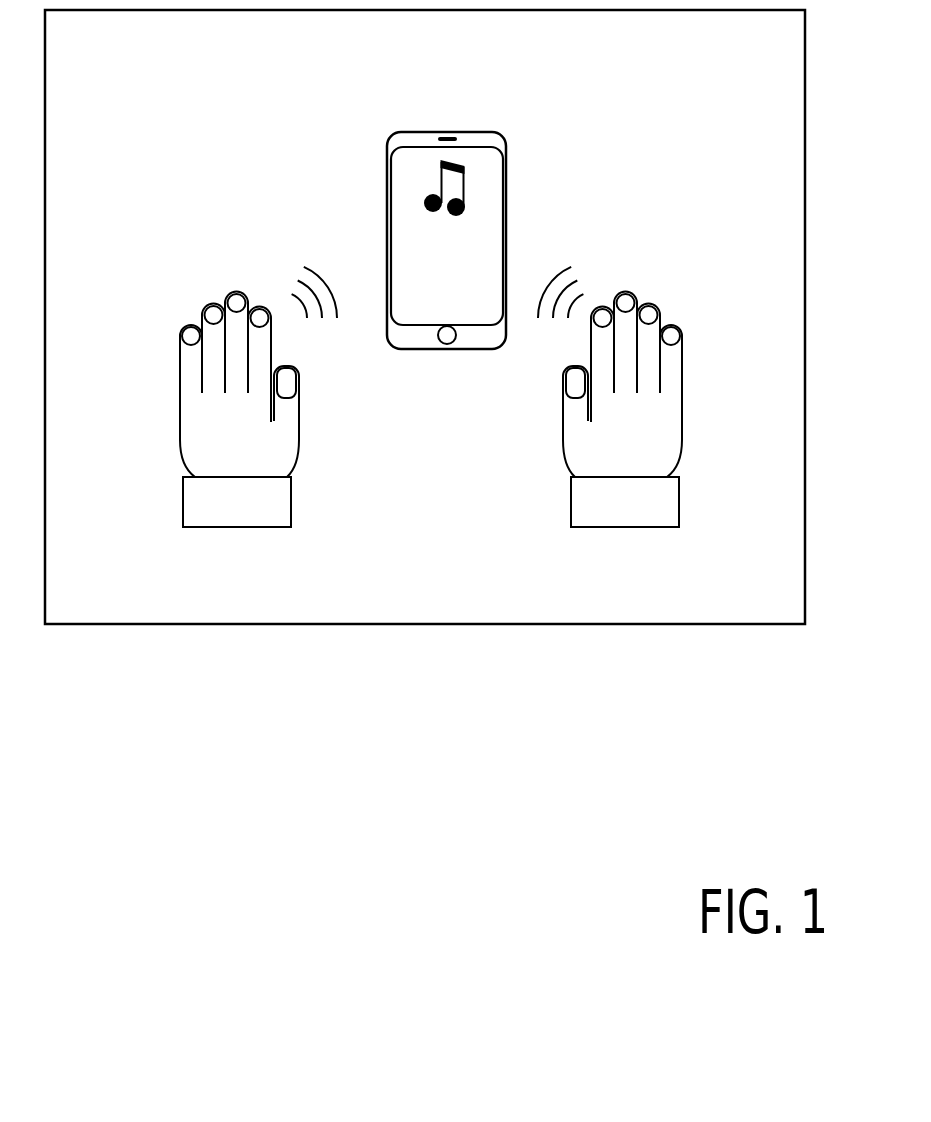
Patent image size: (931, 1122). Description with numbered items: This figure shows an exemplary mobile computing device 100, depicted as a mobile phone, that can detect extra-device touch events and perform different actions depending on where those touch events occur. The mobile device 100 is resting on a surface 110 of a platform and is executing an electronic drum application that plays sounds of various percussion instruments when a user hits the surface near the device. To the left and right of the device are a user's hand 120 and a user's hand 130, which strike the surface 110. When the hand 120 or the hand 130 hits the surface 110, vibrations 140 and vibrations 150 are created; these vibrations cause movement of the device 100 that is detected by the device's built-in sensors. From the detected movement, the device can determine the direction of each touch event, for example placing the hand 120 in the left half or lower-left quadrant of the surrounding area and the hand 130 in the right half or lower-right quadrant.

The mobile computing device 100 is at (433, 312).
The surface 110 is at (169, 61).
The user's hand 120 is at (215, 502).
The user's hand 130 is at (614, 502).
The vibrations 140 is at (281, 247).
The vibrations 150 is at (576, 247).